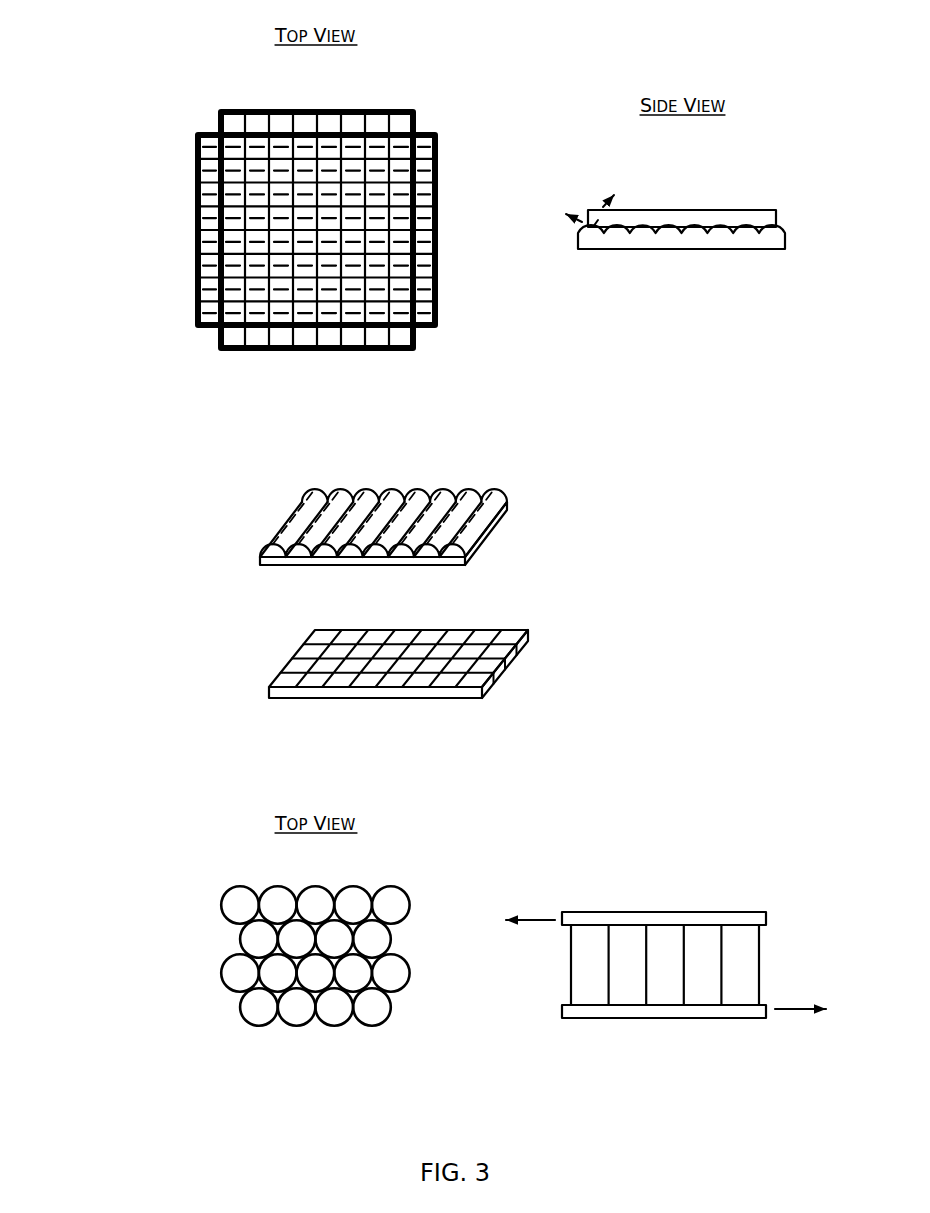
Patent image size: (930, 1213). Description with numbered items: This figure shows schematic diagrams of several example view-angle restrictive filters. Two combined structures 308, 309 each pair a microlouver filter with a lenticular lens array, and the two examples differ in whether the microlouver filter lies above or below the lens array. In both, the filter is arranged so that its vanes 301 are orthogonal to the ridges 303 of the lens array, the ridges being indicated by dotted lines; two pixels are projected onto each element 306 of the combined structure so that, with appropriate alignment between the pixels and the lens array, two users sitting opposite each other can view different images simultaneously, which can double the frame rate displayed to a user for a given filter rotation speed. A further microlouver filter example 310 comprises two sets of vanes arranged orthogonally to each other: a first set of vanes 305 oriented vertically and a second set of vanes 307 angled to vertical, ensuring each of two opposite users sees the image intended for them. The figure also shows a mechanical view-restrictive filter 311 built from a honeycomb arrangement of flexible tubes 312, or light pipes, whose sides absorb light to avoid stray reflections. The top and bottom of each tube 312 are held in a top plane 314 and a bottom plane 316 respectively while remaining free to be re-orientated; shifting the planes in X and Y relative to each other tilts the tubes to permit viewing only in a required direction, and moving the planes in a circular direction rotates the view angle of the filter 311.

The vanes 301 is at (481, 559).
The ridges 303 is at (470, 498).
The first set of vanes 305 is at (512, 670).
The element 306 is at (229, 143).
The second set of vanes 307 is at (410, 699).
The combined structure 308 is at (149, 207).
The combined structure 309 is at (211, 495).
The microlouver filter 310 is at (211, 660).
The mechanical view-restrictive filter 311 is at (168, 934).
The flexible tubes 312 is at (403, 890).
The top plane 314 is at (668, 911).
The bottom plane 316 is at (628, 1012).